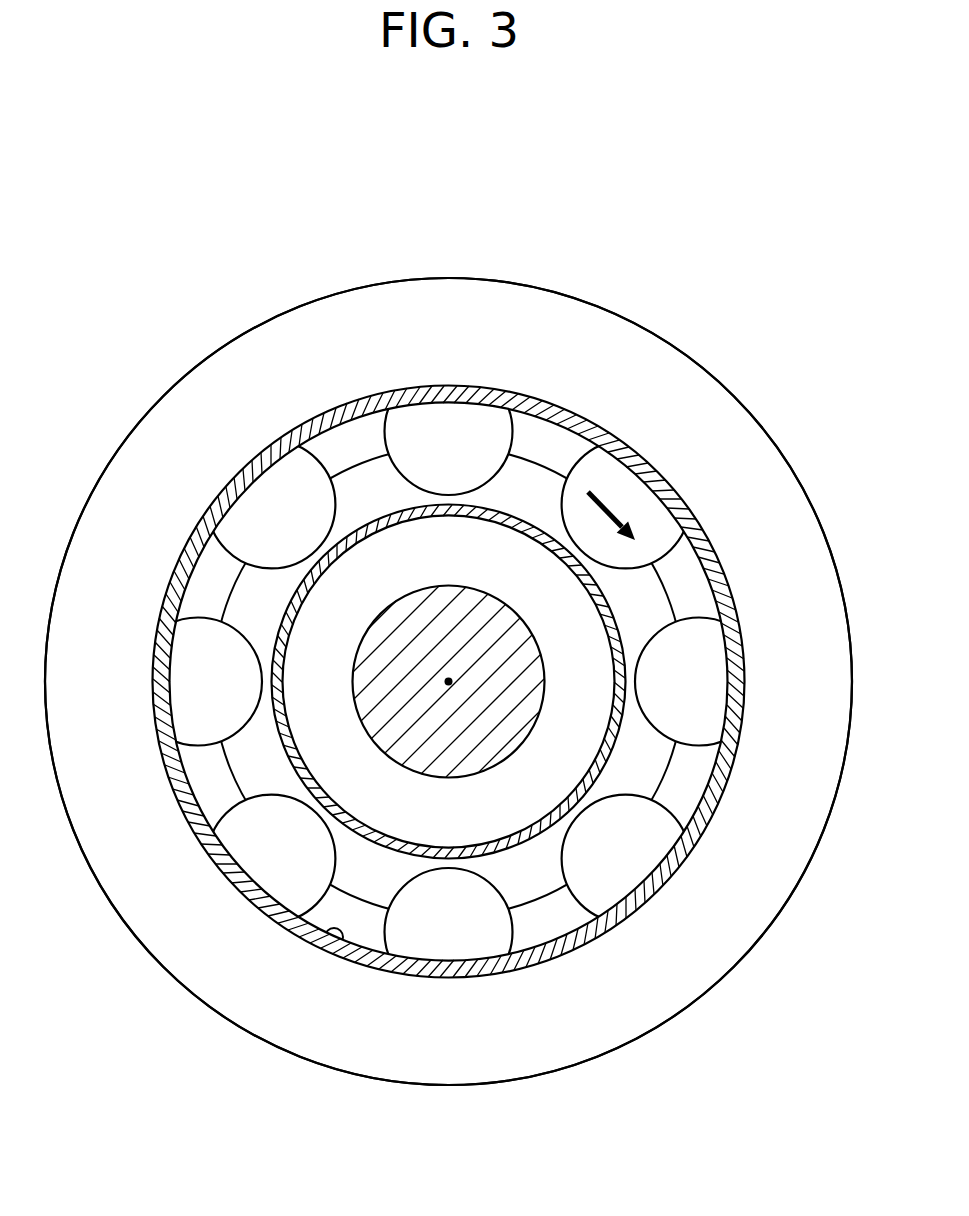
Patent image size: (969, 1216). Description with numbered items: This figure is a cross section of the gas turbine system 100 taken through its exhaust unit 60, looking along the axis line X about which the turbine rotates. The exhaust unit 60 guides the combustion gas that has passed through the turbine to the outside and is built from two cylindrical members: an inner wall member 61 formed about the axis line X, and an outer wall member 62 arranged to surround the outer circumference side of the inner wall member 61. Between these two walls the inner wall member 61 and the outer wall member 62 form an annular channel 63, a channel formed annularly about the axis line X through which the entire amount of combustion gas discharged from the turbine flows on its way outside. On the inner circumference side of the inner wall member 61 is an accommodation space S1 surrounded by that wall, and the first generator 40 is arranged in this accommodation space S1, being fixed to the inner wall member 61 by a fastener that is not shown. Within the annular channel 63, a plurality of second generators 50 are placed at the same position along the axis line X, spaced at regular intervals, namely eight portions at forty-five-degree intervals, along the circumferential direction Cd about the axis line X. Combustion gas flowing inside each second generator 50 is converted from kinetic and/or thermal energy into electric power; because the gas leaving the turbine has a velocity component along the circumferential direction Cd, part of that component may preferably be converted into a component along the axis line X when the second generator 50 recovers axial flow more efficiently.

The rolling bearing 100 is at (226, 178).
The exhaust unit 60 is at (170, 382).
The second generator 50 is at (450, 413).
The annular channel 63 is at (335, 952).
The outer wall member 62 is at (543, 960).
The inner wall member 61 is at (387, 523).
The first generator 40 is at (508, 733).
The axis line X is at (446, 684).
The accommodation space S1 is at (487, 828).
The circumferential direction Cd is at (610, 502).